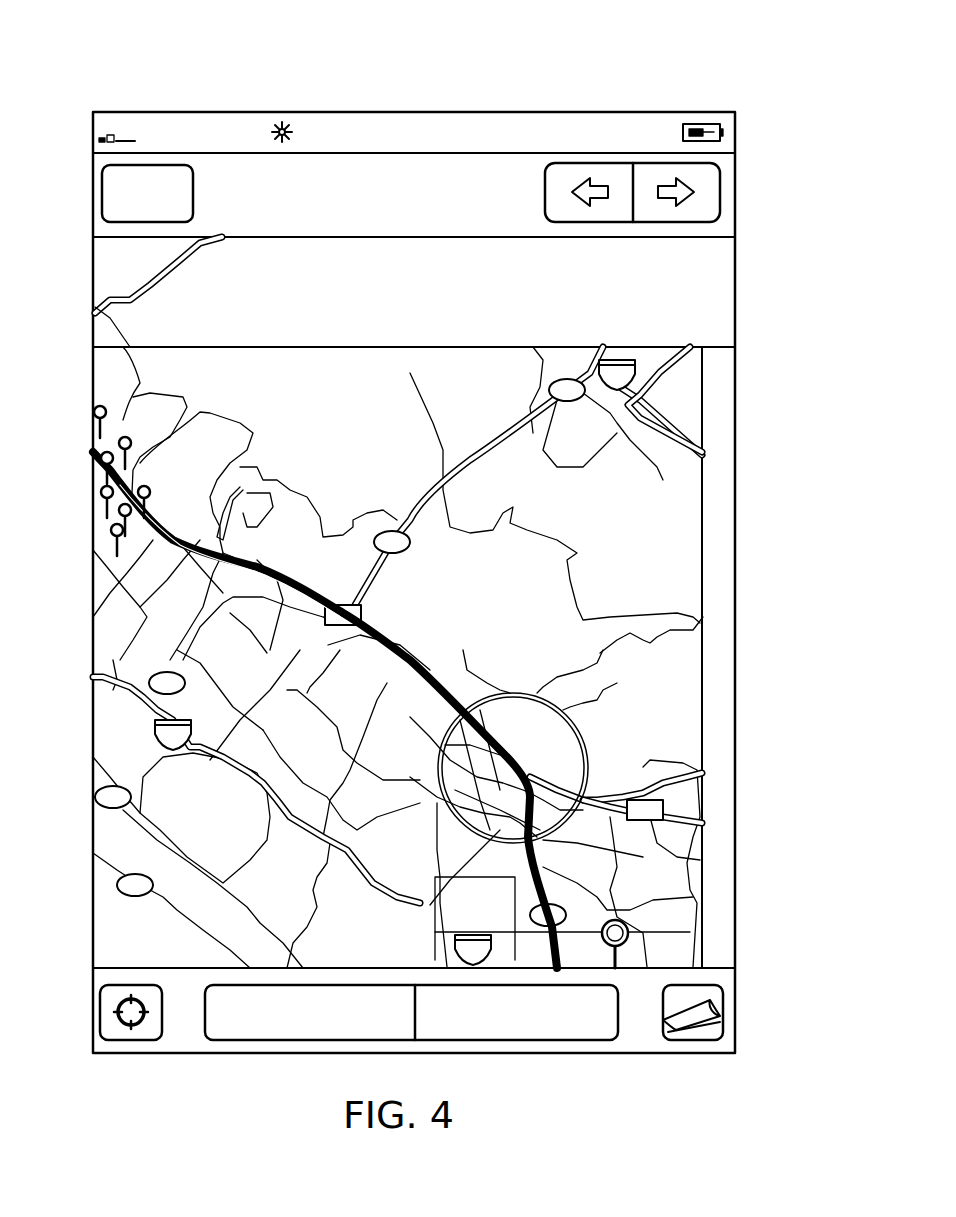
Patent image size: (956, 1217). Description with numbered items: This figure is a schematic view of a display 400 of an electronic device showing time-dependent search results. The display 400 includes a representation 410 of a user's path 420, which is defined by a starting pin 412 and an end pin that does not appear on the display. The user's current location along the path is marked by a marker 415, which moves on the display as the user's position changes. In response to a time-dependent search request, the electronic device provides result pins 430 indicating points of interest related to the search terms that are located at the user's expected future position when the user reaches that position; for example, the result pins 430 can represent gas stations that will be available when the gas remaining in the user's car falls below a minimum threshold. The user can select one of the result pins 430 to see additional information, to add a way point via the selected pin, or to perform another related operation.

The display 400 is at (500, 78).
The representation 410 is at (686, 485).
The starting pin 412 is at (630, 925).
The marker 415 is at (543, 732).
The user's path 420 is at (328, 645).
The result pins 430 is at (100, 490).